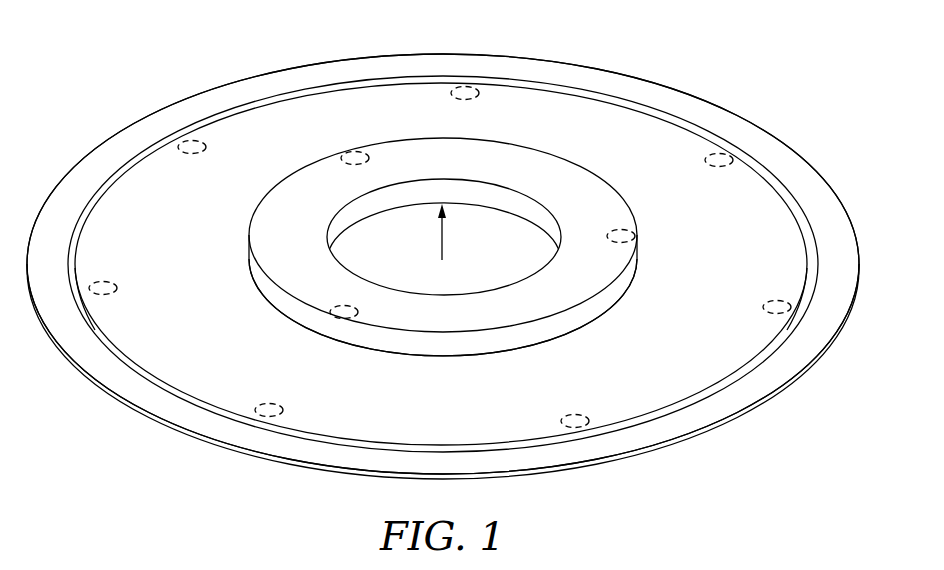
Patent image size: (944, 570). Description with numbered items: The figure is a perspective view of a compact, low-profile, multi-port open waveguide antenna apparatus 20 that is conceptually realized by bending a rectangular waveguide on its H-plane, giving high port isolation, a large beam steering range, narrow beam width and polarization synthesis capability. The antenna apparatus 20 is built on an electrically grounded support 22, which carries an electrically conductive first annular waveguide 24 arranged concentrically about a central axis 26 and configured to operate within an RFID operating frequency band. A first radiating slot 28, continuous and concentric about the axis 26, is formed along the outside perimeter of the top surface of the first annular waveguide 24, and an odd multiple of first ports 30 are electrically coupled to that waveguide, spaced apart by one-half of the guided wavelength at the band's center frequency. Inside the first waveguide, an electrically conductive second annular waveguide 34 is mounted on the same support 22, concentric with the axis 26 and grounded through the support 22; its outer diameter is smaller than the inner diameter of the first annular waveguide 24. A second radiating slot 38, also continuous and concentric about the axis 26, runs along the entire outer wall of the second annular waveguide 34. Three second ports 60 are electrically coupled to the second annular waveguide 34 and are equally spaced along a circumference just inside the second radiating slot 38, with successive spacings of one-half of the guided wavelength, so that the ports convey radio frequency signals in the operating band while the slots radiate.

The antenna apparatus 20 is at (187, 40).
The electrically grounded support 22 is at (690, 105).
The first annular waveguide 24 is at (581, 108).
The first radiating slot 28 is at (320, 90).
The mounting hole 30 is at (466, 87).
The second annular waveguide 34 is at (538, 151).
The second radiating slot 38 is at (518, 335).
The axis 26 is at (440, 243).
The second ports 60 is at (355, 152).